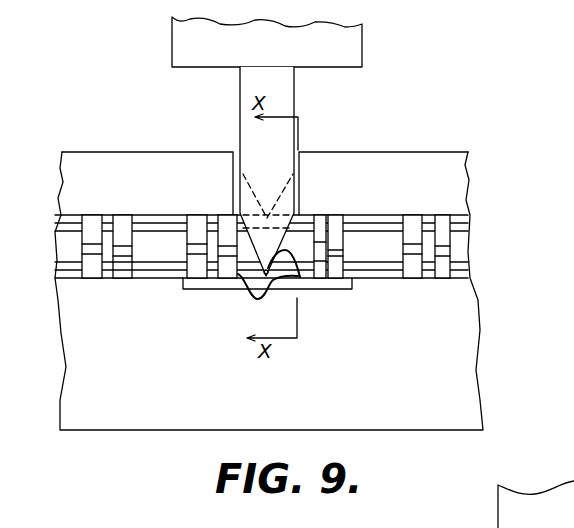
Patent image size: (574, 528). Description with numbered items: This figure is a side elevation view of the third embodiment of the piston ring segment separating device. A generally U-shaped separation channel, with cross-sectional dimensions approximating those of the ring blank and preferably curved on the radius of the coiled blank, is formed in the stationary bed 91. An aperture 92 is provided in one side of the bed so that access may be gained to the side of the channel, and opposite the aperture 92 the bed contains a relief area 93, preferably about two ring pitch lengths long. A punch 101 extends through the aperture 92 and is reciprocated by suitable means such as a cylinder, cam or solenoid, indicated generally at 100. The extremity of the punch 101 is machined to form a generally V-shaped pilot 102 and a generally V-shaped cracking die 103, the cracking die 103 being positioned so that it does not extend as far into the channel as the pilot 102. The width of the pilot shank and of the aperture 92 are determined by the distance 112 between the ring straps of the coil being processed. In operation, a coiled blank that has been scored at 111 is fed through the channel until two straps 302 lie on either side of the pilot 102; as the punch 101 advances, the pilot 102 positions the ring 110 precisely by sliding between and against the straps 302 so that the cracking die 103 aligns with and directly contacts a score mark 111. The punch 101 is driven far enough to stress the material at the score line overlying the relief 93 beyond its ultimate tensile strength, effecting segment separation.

The reciprocating means 100 is at (360, 50).
The punch 101 is at (240, 125).
The aperture 92 is at (274, 195).
The stationary bed 91 is at (469, 176).
The cracking die 103 is at (270, 213).
The score mark 111 is at (373, 220).
The ring 110 is at (55, 235).
The ring straps 302 is at (125, 278).
The relief area 93 is at (232, 290).
The distance between ring straps 112 is at (258, 297).
The pilot 102 is at (298, 276).